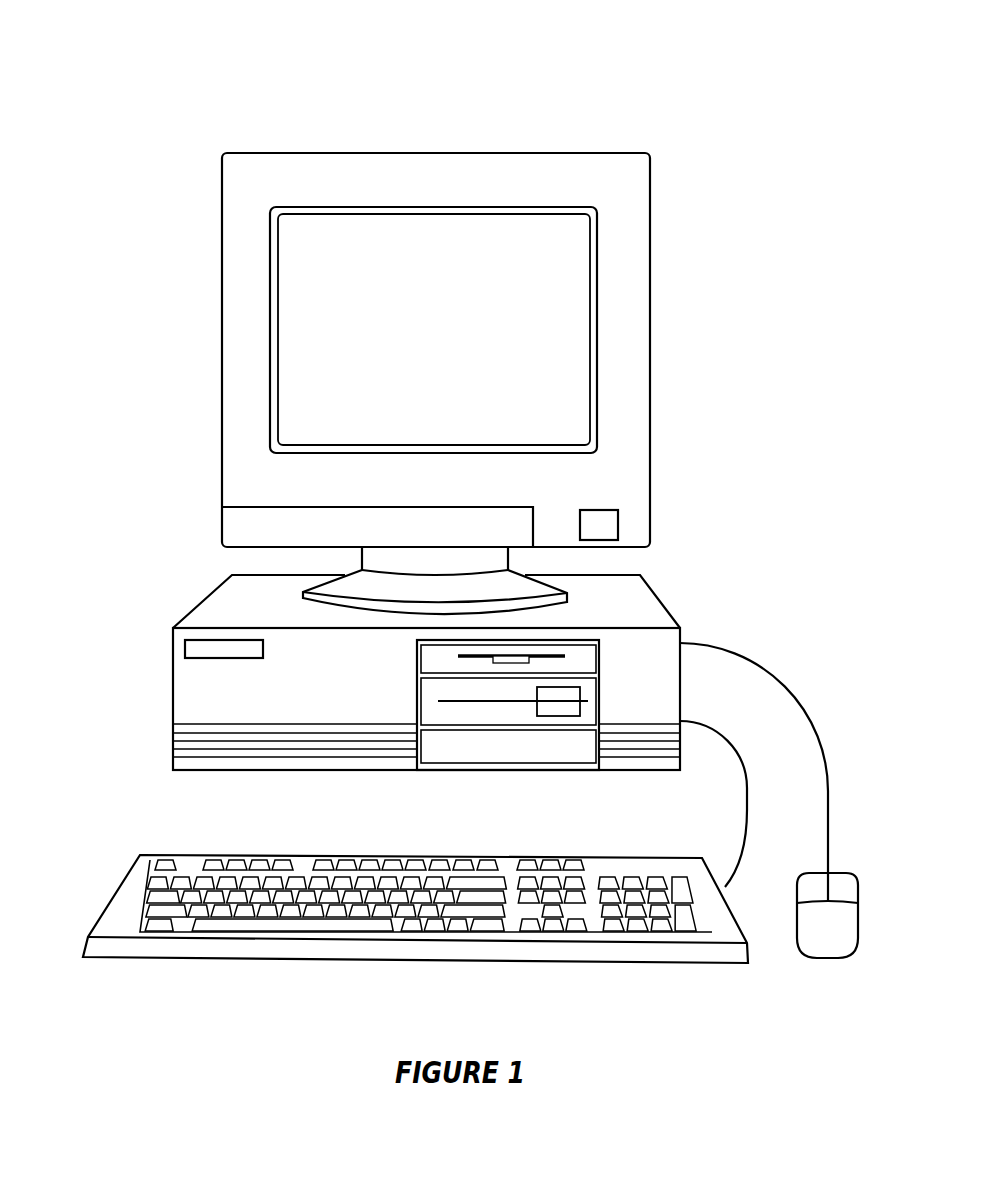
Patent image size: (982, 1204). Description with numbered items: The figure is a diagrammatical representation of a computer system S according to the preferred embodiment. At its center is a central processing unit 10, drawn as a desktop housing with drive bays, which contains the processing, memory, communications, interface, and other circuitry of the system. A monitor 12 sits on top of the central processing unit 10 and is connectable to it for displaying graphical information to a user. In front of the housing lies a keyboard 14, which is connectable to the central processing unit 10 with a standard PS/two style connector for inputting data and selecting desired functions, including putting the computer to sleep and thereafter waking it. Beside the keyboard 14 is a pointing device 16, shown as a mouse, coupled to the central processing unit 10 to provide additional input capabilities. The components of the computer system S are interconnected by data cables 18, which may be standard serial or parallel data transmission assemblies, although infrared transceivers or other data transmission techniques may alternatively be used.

The computer system S is at (717, 70).
The central processing unit 10 is at (173, 680).
The monitor 12 is at (222, 343).
The keyboard 14 is at (125, 880).
The pointing device 16 is at (843, 876).
The data cables 18 is at (757, 667).